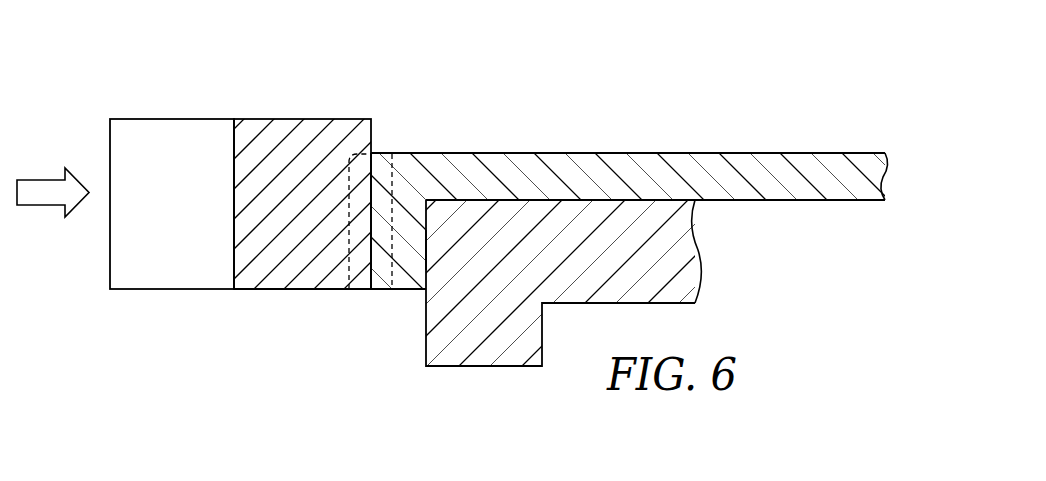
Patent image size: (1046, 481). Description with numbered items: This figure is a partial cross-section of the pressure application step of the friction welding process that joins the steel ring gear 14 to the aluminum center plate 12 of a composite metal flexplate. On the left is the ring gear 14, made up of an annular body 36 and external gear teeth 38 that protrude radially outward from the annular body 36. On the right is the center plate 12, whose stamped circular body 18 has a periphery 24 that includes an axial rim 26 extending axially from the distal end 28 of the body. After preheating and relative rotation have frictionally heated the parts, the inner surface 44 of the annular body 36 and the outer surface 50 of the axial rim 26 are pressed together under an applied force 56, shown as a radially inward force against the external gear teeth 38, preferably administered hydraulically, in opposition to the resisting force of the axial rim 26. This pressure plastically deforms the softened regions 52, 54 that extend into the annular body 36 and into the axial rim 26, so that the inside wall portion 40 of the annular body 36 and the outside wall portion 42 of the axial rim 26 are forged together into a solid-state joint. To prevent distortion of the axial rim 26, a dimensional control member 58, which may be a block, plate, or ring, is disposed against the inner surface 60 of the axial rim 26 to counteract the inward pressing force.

The aluminum center plate 12 is at (640, 239).
The steel ring gear 14 is at (313, 159).
The circular body 18 is at (682, 170).
The periphery 24 is at (425, 142).
The axial rim 26 is at (412, 244).
The distal end 28 is at (405, 175).
The annular body 36 is at (294, 138).
The external gear teeth 38 is at (166, 135).
The inside wall portion 40 is at (361, 232).
The outside wall portion 42 is at (382, 255).
The inner surface 44 is at (380, 182).
The outer surface 50 is at (356, 215).
The softened region 52 is at (356, 214).
The softened region 54 is at (393, 268).
The applied force 56 is at (35, 190).
The dimensional control member 58 is at (503, 342).
The inner surface 60 is at (428, 258).